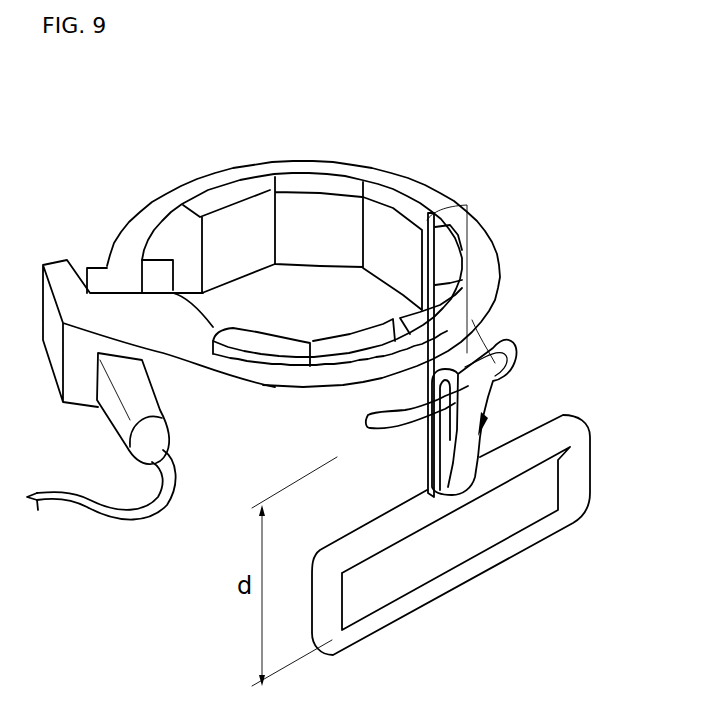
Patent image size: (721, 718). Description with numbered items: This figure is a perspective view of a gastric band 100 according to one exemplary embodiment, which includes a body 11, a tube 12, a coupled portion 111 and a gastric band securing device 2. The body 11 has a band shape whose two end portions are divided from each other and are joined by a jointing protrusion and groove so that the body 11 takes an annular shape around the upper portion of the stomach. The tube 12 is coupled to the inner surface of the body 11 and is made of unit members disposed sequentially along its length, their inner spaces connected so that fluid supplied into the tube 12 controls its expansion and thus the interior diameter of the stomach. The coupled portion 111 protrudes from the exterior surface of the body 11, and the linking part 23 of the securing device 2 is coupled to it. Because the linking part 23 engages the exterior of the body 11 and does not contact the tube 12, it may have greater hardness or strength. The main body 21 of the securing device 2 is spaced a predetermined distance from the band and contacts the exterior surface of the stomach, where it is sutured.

The gastric band 100 is at (640, 389).
The body 11 is at (478, 258).
The tube 12 is at (397, 205).
The coupled portion 111 is at (390, 427).
The gastric band securing device 2 is at (595, 308).
The main body 21 is at (572, 446).
The linking part 23 is at (496, 367).